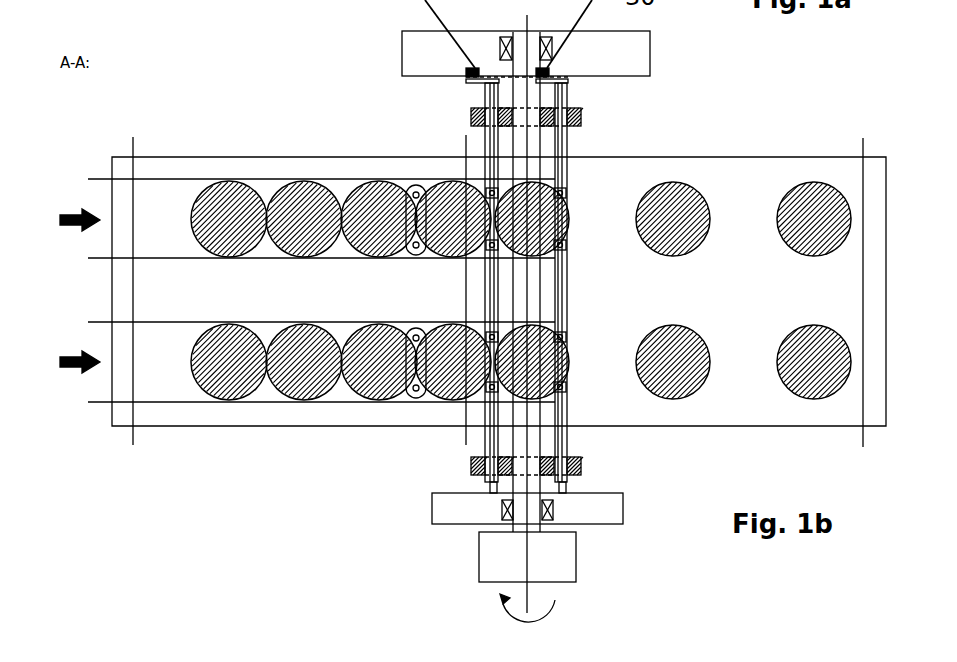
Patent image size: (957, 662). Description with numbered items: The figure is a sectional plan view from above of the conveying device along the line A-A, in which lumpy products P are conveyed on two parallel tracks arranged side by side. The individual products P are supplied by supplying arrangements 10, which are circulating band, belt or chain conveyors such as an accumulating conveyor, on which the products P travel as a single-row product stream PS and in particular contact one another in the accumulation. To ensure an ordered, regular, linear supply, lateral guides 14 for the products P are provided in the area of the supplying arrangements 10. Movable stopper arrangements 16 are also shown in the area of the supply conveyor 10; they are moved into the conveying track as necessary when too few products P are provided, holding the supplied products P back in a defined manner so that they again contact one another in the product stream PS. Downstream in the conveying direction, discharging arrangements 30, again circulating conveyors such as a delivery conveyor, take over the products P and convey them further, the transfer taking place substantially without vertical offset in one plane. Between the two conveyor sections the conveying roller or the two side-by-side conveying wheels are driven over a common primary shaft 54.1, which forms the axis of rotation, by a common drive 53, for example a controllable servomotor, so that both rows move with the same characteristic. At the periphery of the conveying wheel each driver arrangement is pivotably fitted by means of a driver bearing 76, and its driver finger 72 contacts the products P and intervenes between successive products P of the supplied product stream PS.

The supplying arrangements 10 is at (200, 298).
The lateral guides 14 is at (103, 177).
The stopper arrangements 16 is at (412, 192).
The discharging arrangements 30 is at (748, 192).
The drive 53 is at (562, 555).
The primary shaft 54.1 is at (528, 503).
The driver finger 72 is at (563, 193).
The driver bearing 76 is at (486, 142).
The products P is at (228, 205).
The product stream PS is at (272, 166).